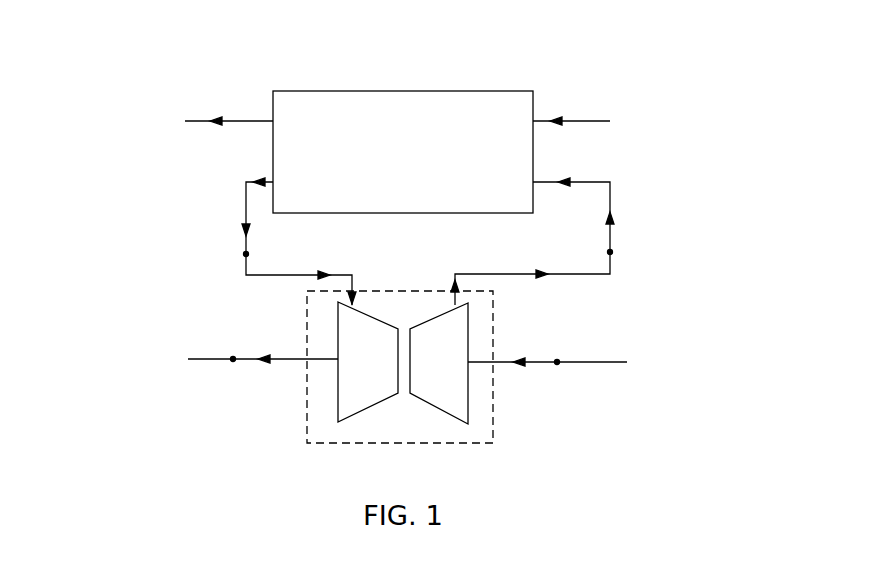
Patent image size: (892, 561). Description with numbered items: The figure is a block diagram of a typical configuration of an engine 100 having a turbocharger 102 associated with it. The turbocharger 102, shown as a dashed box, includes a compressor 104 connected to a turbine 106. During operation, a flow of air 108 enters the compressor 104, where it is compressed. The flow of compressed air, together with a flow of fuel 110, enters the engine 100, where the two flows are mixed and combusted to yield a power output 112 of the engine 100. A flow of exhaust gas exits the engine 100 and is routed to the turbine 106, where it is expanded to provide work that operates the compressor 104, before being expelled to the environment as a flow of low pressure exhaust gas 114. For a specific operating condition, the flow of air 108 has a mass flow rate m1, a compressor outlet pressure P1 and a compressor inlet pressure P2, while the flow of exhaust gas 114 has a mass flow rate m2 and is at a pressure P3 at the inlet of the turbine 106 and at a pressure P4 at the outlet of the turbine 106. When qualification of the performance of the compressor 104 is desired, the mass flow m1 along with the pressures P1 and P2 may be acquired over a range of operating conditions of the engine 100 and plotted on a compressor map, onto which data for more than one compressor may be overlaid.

The engine 100 is at (382, 91).
The turbocharger 102 is at (473, 443).
The compressor 104 is at (468, 390).
The turbine 106 is at (338, 390).
The flow of air 108 is at (577, 362).
The flow of fuel 110 is at (585, 118).
The power output 112 is at (252, 121).
The flow of low pressure exhaust gas 114 is at (290, 355).
The compressor outlet pressure P1 is at (628, 252).
The compressor inlet pressure P2 is at (567, 377).
The turbine inlet pressure P3 is at (230, 254).
The turbine outlet pressure P4 is at (233, 378).
The air mass flow rate m1 is at (531, 262).
The exhaust gas mass flow rate m2 is at (312, 264).